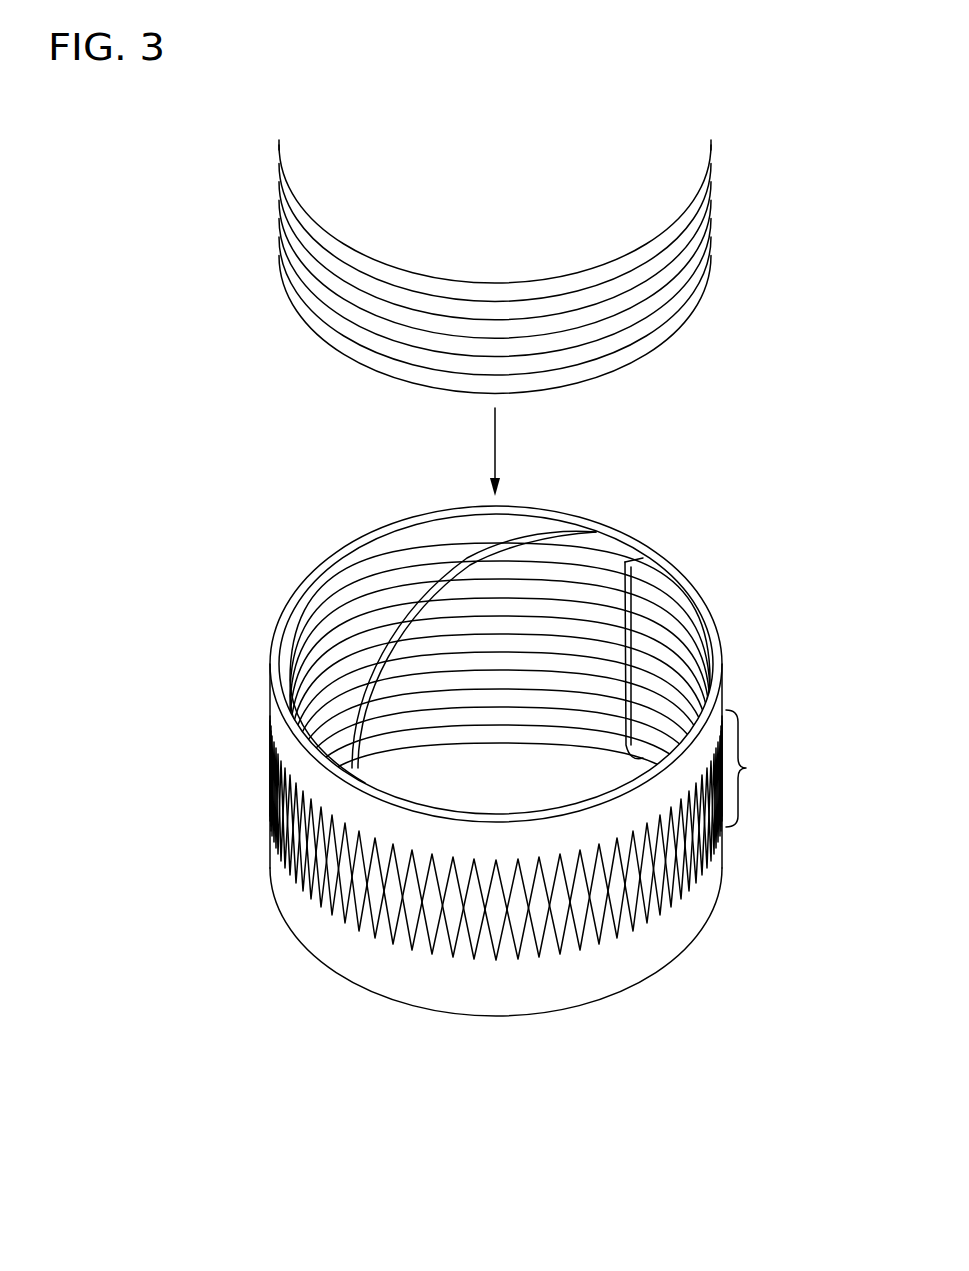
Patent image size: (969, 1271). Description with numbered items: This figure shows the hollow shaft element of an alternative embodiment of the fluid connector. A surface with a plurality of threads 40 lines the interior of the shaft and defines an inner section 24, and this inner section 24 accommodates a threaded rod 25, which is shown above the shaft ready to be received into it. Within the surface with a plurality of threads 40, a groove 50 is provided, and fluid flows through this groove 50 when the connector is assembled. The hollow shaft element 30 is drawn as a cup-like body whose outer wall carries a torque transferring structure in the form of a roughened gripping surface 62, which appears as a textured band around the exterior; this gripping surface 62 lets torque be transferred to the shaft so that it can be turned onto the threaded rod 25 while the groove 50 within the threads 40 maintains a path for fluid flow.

The inner section 24 is at (356, 621).
The threaded rod 25 is at (712, 205).
The cylindrical housing 30 is at (570, 770).
The surface with a plurality of threads 40 is at (628, 658).
The groove 50 is at (467, 568).
The roughened gripping surface 62 is at (517, 905).